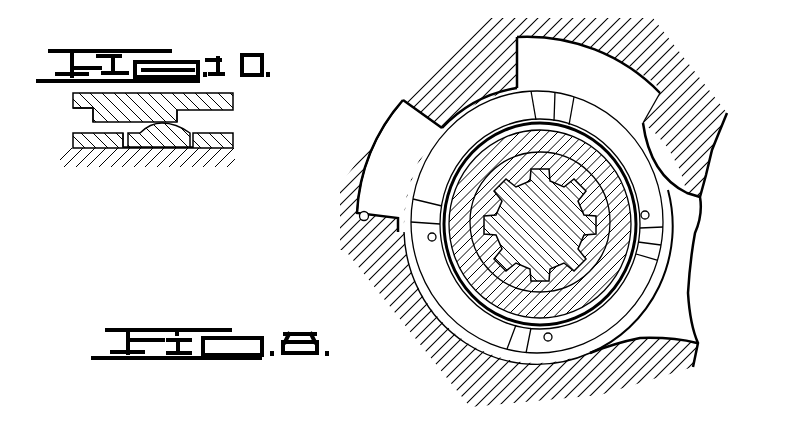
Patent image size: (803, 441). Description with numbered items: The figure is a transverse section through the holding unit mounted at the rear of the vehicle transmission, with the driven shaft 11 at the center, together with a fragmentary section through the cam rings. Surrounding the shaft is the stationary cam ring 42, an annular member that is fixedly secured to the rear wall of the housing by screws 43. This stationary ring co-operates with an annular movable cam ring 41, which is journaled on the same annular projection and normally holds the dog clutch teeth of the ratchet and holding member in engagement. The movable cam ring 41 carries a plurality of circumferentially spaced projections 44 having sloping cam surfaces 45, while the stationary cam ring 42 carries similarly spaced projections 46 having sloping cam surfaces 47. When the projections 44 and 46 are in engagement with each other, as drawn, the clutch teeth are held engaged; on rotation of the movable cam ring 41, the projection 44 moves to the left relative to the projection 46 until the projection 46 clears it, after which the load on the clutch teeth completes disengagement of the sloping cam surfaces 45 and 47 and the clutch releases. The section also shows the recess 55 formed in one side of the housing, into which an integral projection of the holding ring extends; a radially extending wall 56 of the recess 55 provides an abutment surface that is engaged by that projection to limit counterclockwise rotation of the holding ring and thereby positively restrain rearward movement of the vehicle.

In FIG. 8, the driven shaft 11 is at (552, 249).
In FIG. 10, the movable cam ring 41 is at (236, 100).
In FIG. 8, the stationary cam ring 42 is at (614, 121).
In FIG. 10, the stationary cam ring 42 is at (236, 134).
In FIG. 8, the screws 43 is at (529, 108).
In FIG. 10, the projections 44 is at (93, 118).
In FIG. 10, the sloping cam surfaces 45 is at (177, 118).
In FIG. 8, the projections 46 is at (556, 104).
In FIG. 10, the projections 46 is at (186, 140).
In FIG. 8, the sloping cam surfaces 47 is at (576, 100).
In FIG. 10, the sloping cam surfaces 47 is at (150, 134).
In FIG. 8, the recess 55 is at (355, 190).
In FIG. 8, the radially extending wall 56 is at (357, 219).